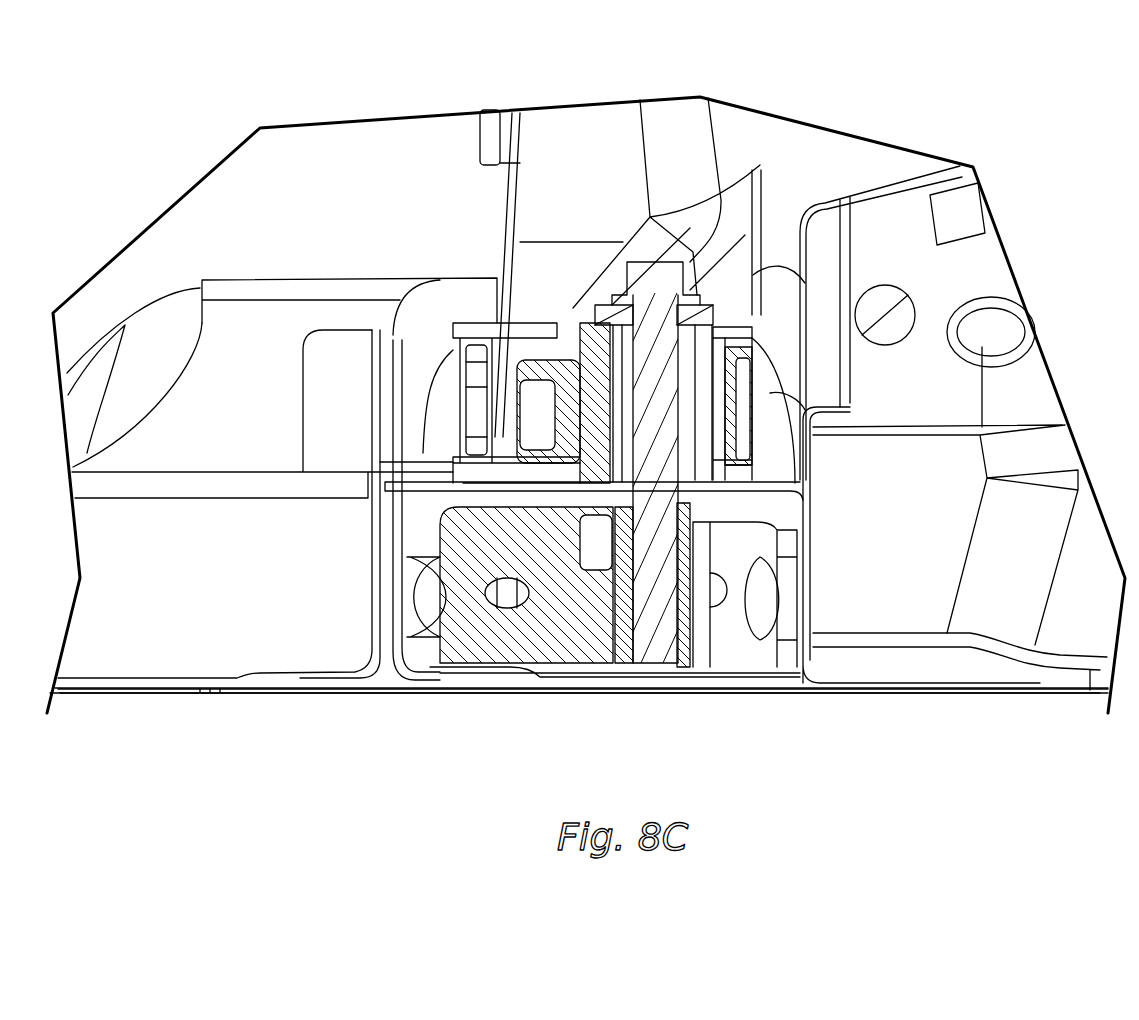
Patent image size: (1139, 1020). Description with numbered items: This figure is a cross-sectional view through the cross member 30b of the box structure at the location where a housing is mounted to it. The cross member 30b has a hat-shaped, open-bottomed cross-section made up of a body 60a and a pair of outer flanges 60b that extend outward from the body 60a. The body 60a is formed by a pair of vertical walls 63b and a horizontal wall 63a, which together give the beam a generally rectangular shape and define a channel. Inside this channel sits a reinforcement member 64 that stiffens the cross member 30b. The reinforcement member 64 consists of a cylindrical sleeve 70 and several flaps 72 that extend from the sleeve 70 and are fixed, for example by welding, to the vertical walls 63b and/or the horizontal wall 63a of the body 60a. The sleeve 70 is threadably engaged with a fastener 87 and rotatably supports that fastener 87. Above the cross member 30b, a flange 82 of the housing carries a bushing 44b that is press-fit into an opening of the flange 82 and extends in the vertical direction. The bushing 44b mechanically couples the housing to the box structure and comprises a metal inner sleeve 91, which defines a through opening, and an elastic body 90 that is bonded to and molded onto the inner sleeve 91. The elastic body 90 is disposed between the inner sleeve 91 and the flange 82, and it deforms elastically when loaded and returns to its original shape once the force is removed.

The cross member 30b is at (362, 703).
The bushing 44b is at (750, 347).
The body 60a is at (373, 567).
The outer flanges 60b is at (887, 697).
The horizontal wall 63a is at (487, 483).
The vertical walls 63b is at (802, 573).
The reinforcement member 64 is at (585, 653).
The cylindrical sleeve 70 is at (687, 577).
The flaps 72 is at (560, 627).
The flange 82 is at (747, 377).
The fastener 87 is at (657, 630).
The elastic body 90 is at (713, 445).
The inner sleeve 91 is at (605, 390).